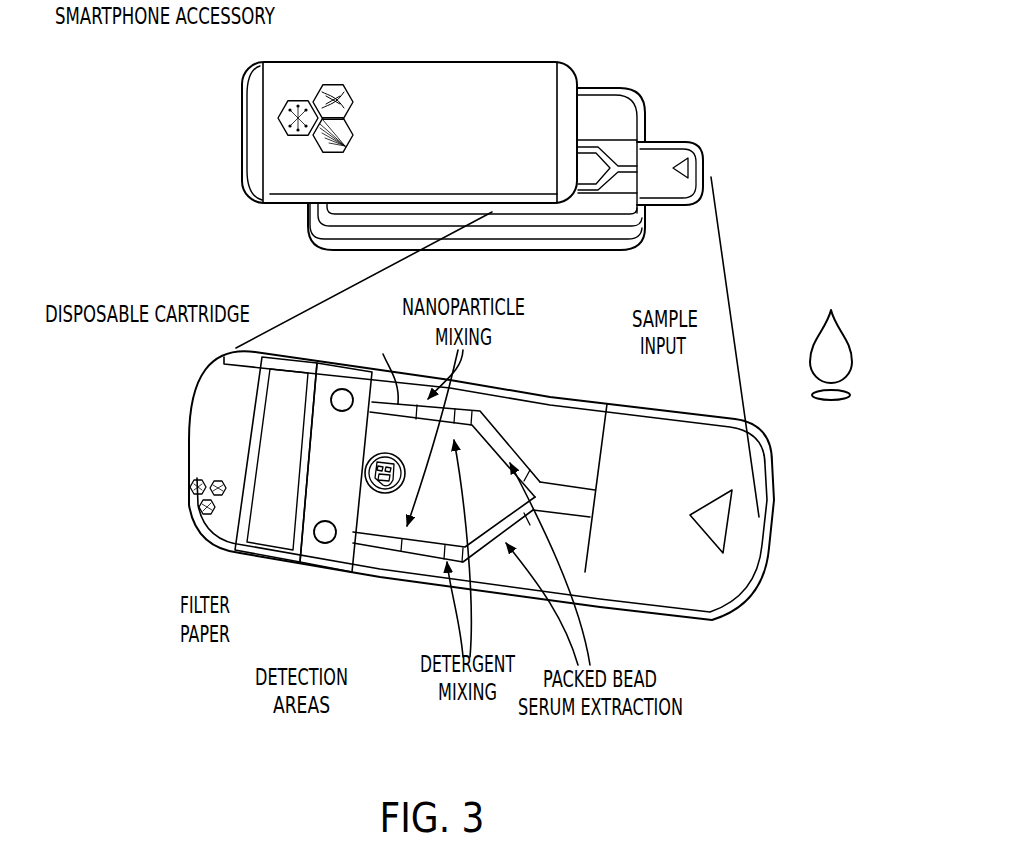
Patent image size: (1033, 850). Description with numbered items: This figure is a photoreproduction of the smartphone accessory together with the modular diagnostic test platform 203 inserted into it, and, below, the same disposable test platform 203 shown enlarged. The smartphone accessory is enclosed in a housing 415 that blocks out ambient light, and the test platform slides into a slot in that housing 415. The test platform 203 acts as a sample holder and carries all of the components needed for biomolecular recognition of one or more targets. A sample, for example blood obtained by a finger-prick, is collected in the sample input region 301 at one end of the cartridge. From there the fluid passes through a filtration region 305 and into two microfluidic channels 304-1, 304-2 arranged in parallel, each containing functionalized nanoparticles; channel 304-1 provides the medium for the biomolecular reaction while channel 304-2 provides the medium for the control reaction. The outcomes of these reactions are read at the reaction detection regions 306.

The housing 415 is at (503, 60).
The modular diagnostic test platform 203 is at (740, 536).
The sample input region 301 is at (714, 520).
The microfluidic channel 304-1 is at (451, 413).
The microfluidic channel 304-2 is at (392, 546).
The filtration region 305 is at (278, 491).
The reaction detection regions 306 is at (332, 418).